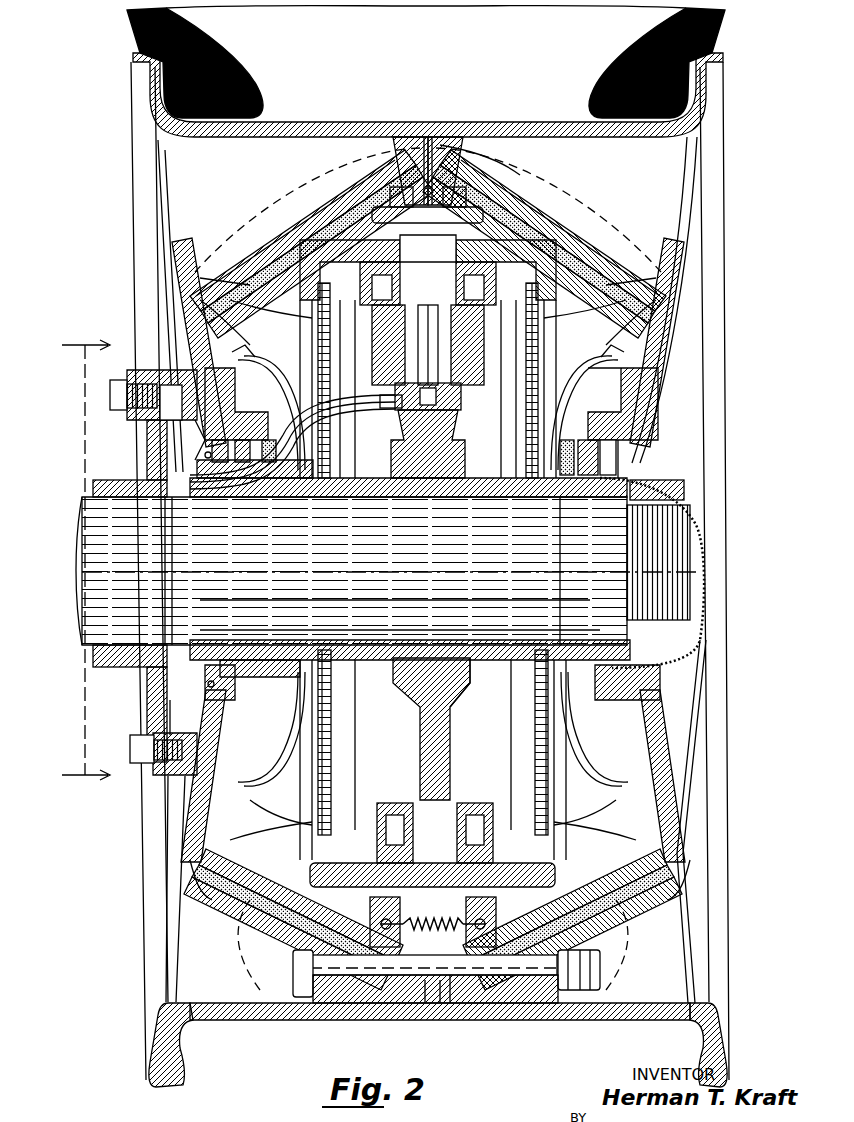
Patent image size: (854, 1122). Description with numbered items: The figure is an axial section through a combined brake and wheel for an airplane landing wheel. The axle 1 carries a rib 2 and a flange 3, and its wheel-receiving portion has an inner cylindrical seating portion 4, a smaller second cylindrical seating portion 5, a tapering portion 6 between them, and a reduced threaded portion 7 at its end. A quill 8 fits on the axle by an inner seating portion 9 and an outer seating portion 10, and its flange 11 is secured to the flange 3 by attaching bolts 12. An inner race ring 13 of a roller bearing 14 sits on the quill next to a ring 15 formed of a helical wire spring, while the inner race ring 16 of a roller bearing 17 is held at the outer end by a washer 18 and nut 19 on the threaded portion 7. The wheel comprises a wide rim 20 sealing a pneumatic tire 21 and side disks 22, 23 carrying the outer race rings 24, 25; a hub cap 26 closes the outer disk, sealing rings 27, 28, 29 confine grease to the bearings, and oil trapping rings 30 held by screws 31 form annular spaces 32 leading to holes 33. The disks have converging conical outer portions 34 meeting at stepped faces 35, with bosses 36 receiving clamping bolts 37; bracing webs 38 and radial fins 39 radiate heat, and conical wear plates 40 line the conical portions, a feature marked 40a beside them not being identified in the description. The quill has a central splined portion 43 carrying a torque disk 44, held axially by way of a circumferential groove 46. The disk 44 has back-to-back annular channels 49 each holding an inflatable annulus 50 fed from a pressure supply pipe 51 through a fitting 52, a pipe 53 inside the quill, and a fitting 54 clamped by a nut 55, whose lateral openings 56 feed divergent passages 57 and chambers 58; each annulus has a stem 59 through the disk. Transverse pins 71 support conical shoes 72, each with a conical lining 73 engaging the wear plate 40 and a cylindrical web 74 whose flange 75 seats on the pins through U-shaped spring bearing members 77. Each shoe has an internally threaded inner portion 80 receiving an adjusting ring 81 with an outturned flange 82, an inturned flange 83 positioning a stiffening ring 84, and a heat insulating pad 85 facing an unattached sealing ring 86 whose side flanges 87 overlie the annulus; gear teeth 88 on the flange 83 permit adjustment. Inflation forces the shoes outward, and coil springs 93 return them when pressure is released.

The axle 1 is at (90, 520).
The rib 2 is at (165, 552).
The flange 3 is at (150, 458).
The inner cylindrical seating portion 4 is at (391, 573).
The second cylindrical seating portion 5 is at (315, 563).
The tapering portion 6 is at (410, 568).
The reduced threaded portion 7 is at (690, 583).
The quill 8 is at (360, 640).
The inner seating portion 9 is at (243, 640).
The outer seating portion 10 is at (600, 640).
The flange 11 is at (170, 722).
The attaching bolts 12 is at (132, 752).
The inner race ring 13 is at (243, 462).
The roller bearing 14 is at (218, 462).
The ring 15 is at (207, 462).
The inner race ring 16 is at (610, 480).
The roller bearing 17 is at (588, 480).
The washer 18 is at (625, 482).
The nut 19 is at (690, 482).
The rim 20 is at (522, 122).
The pneumatic tire 21 is at (138, 32).
The side disk 22 is at (190, 290).
The side disk 23 is at (662, 326).
The outer race ring 24 is at (432, 534).
The outer race ring 25 is at (605, 428).
The hub cap 26 is at (705, 545).
The sealing ring 27 is at (562, 478).
The sealing ring 28 is at (270, 462).
The sealing ring 29 is at (195, 432).
The oil trapping rings 30 is at (300, 475).
The screws 31 is at (252, 358).
The annular spaces 32 is at (441, 755).
The holes 33 is at (238, 780).
The converging conical outer portions 34 is at (232, 245).
The stepped faces 35 is at (432, 137).
The bosses 36 is at (305, 997).
The bolts 37 is at (375, 1003).
The bracing webs 38 is at (163, 220).
The radial fins 39 is at (200, 895).
The conical wear plates 40 is at (325, 210).
The drum flange 40a is at (192, 278).
The central splined portion 43 is at (440, 478).
The torque disk 44 is at (405, 718).
The circumferential groove 46 is at (455, 690).
The annular channels 49 is at (478, 800).
The inflatable annulus 50 is at (426, 345).
The pressure supply pipe 51 is at (108, 393).
The fitting 52 is at (130, 368).
The pipe 53 is at (298, 490).
The fitting 54 is at (395, 410).
The nut 55 is at (443, 405).
The lateral openings 56 is at (428, 444).
The divergent passages 57 is at (388, 347).
The chambers 58 is at (428, 278).
The stem 59 is at (428, 243).
The transverse pins 71 is at (500, 190).
The conical shoes 72 is at (268, 250).
The conical lining 73 is at (225, 280).
The cylindrical web 74 is at (300, 255).
The flange 75 is at (433, 924).
The U-shaped spring bearing members 77 is at (400, 200).
The internally threaded inner portion 80 is at (270, 295).
The adjusting ring 81 is at (580, 820).
The outturned flange 82 is at (428, 570).
The inturned flange 83 is at (433, 573).
The stiffening ring 84 is at (340, 380).
The heat insulating pad 85 is at (433, 559).
The sealing ring 86 is at (486, 805).
The side flanges 87 is at (470, 800).
The gear teeth 88 is at (433, 804).
The coil springs 93 is at (455, 1003).